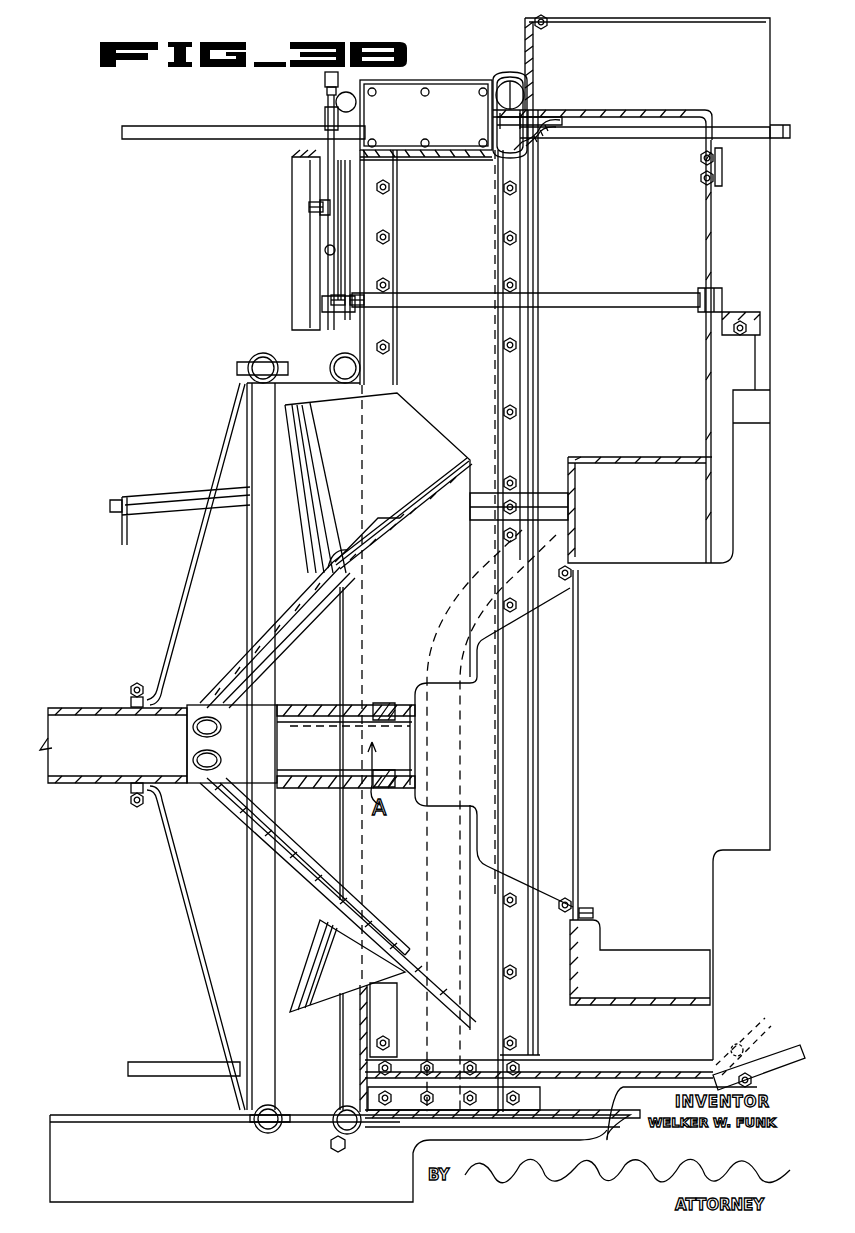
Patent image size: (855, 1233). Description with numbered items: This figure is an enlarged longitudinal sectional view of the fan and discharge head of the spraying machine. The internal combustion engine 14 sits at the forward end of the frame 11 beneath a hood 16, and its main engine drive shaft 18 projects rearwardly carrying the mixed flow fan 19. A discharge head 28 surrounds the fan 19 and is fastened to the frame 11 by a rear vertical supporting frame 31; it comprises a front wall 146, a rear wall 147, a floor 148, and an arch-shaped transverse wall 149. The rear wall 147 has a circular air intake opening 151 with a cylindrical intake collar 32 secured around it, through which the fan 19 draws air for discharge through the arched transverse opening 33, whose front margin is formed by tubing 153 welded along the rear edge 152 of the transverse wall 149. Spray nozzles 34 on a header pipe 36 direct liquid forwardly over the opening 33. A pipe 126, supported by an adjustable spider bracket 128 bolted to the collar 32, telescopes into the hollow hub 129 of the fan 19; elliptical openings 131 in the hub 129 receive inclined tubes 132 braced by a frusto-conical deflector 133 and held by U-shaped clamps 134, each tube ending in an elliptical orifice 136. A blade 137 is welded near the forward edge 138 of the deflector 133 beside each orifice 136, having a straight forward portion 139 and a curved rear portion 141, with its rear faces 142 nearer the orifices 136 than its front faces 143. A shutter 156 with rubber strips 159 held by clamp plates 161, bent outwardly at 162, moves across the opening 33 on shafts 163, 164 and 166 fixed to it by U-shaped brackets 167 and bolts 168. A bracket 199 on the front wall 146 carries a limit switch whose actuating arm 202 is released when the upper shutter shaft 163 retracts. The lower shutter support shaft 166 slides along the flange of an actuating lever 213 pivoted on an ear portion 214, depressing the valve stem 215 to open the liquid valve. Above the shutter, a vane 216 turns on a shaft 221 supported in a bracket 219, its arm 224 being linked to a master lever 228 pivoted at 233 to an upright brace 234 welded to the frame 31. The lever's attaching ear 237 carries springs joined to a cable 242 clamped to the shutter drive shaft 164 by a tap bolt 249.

The frame 11 is at (80, 1132).
The internal combustion engine 14 is at (697, 590).
The hood 16 is at (720, 22).
The main engine drive shaft 18 is at (332, 750).
The mixed flow fan 19 is at (320, 863).
The discharge head 28 is at (509, 66).
The rear vertical supporting frame 31 is at (315, 346).
The cylindrical intake collar 32 is at (262, 403).
The transverse opening 33 is at (410, 210).
The spray nozzles 34 is at (324, 78).
The header pipe 36 is at (347, 237).
The pipe 126 is at (90, 720).
The adjustable spider bracket 128 is at (132, 685).
The hub 129 is at (298, 705).
The elliptical openings 131 is at (190, 760).
The tubes 132 is at (245, 660).
The frusto-conical deflector 133 is at (426, 508).
The U-shaped clamps 134 is at (332, 557).
The elliptical orifice 136 is at (388, 520).
The blade 137 is at (405, 455).
The forward edge 138 is at (470, 458).
The forward portion 139 is at (398, 410).
The rear portion 141 is at (288, 437).
The rear faces 142 is at (330, 505).
The front faces 143 is at (322, 1012).
The front wall 146 is at (735, 246).
The rear wall 147 is at (372, 270).
The floor 148 is at (603, 1115).
The transverse wall 149 is at (680, 96).
The circular air intake opening 151 is at (362, 364).
The rear edge 152 is at (523, 120).
The tubing 153 is at (520, 90).
The shutter 156 is at (452, 201).
The rubber strips 159 is at (370, 222).
The clamp plates 161 is at (383, 258).
The bent outwardly portion 162 is at (528, 255).
The upper shutter shaft 163 is at (172, 133).
The shutter drive shaft 164 is at (148, 500).
The lower shutter support shaft 166 is at (612, 1068).
The U-shaped brackets 167 is at (483, 505).
The bolts 168 is at (420, 1068).
The bracket 199 is at (752, 142).
The actuating arm 202 is at (783, 123).
The actuating lever 213 is at (770, 1047).
The ear portion 214 is at (735, 1045).
The valve stem 215 is at (752, 1085).
The vane 216 is at (440, 130).
The bracket 219 is at (528, 145).
The shaft 221 is at (322, 126).
The arm 224 is at (325, 153).
The master lever 228 is at (322, 290).
The pivot 233 is at (307, 210).
The upright brace 234 is at (332, 312).
The attaching ear 237 is at (334, 297).
The cable 242 is at (182, 486).
The tap bolt 249 is at (110, 513).